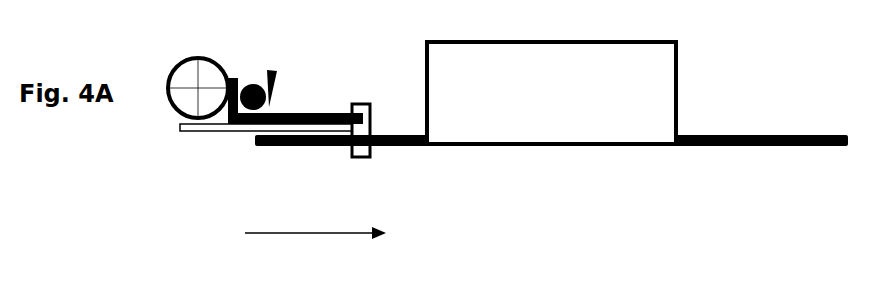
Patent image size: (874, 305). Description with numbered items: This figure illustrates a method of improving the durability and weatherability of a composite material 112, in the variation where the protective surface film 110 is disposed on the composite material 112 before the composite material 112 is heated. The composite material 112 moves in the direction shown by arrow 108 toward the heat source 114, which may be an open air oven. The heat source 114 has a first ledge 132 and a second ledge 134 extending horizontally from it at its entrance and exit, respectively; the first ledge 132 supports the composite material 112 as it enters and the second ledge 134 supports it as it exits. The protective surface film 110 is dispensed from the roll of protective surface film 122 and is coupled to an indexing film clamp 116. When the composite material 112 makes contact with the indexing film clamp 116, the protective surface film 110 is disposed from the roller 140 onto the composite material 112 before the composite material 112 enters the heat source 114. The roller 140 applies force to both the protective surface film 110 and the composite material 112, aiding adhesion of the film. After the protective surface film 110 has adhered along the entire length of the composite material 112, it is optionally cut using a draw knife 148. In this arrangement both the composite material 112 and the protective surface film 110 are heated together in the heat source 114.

The arrow 108 is at (318, 233).
The protective surface film 110 is at (300, 113).
The composite material 112 is at (214, 131).
The heat source 114 is at (552, 40).
The indexing film clamp 116 is at (360, 158).
The roll of protective surface film 122 is at (176, 63).
The first ledge 132 is at (287, 147).
The second ledge 134 is at (763, 147).
The roller 140 is at (255, 84).
The draw knife 148 is at (275, 90).